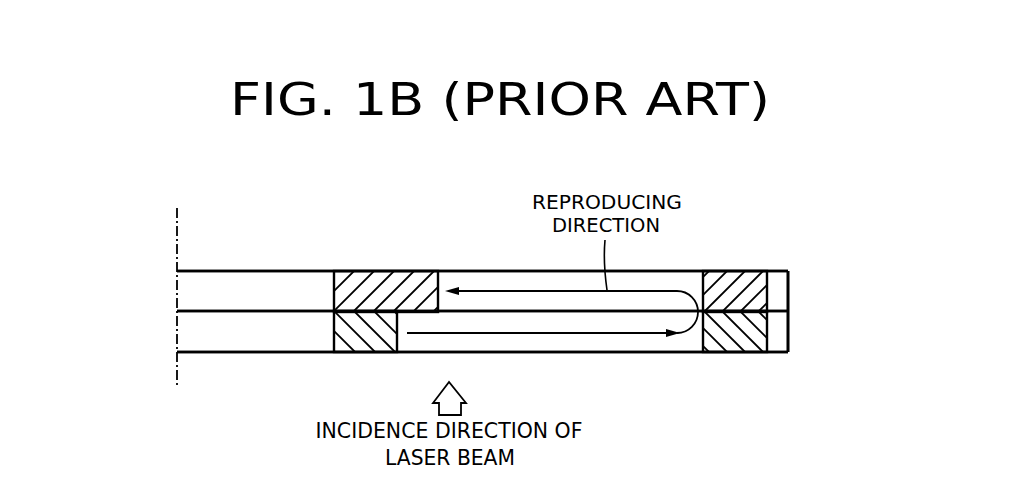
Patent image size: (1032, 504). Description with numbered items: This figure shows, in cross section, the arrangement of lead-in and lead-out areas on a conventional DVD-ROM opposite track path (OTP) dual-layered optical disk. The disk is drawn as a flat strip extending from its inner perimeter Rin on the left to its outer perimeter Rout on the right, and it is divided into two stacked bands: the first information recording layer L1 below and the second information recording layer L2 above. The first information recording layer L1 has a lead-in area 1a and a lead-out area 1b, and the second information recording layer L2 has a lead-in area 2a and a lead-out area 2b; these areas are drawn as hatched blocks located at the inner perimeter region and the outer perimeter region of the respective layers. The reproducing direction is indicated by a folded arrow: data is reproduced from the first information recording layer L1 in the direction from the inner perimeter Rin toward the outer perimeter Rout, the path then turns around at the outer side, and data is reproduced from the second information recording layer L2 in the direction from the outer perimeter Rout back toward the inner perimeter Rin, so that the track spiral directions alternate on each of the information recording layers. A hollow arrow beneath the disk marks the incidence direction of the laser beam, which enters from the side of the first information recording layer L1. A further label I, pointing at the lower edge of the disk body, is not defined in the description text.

The optical information storage medium (disc) I is at (528, 353).
The first information recording layer L1 is at (188, 333).
The second information recording layer L2 is at (188, 292).
The lead-in area 1a is at (364, 344).
The lead-out area 1b is at (755, 334).
The lead-in area 2a is at (755, 292).
The lead-out area 2b is at (383, 271).
The inner perimeter Rin is at (176, 312).
The outer perimeter Rout is at (750, 343).